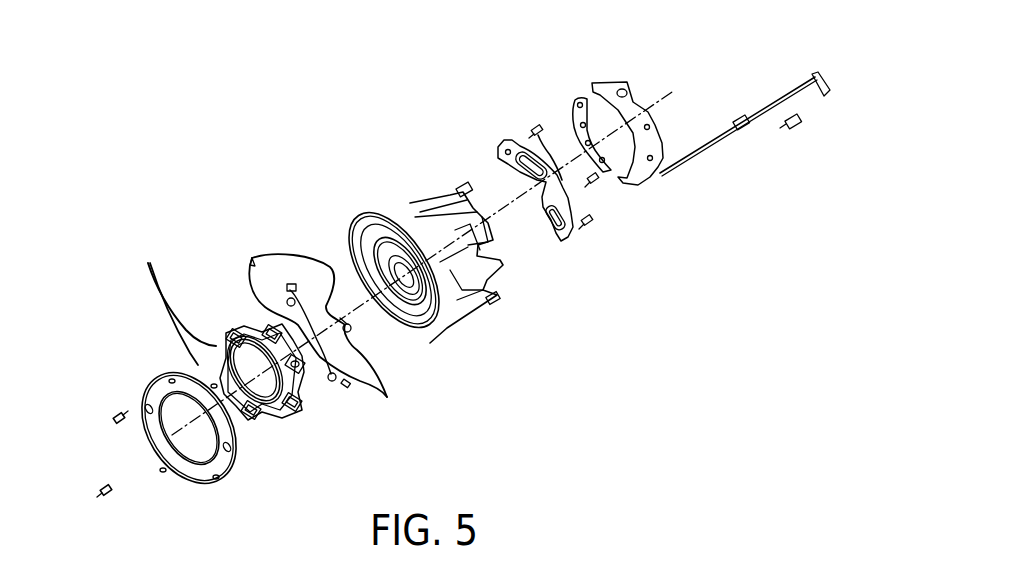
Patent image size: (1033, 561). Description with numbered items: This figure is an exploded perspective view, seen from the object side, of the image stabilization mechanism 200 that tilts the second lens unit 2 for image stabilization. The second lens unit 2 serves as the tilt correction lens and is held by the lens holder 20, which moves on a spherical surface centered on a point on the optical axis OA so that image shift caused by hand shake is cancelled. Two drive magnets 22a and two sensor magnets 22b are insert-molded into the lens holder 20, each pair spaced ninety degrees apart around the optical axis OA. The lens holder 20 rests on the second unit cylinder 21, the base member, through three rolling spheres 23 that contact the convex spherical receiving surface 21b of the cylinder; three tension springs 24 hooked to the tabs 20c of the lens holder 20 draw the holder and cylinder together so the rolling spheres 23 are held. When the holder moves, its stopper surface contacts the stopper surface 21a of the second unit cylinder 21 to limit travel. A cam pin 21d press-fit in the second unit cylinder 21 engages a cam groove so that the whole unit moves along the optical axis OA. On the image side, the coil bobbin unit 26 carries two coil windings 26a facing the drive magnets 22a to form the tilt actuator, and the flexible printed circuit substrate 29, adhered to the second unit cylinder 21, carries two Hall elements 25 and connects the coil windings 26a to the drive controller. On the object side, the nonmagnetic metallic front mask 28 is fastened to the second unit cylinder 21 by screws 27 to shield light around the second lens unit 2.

The image stabilization mechanism 200 is at (830, 40).
The second lens unit 2 is at (263, 397).
The lens holder 20 is at (235, 322).
The tabs 20c is at (233, 360).
The second unit cylinder 21 is at (395, 264).
The stopper surface 21a is at (422, 272).
The spherical receiving surface 21b is at (382, 232).
The cam pin 21d is at (464, 192).
The drive magnets 22a is at (256, 350).
The sensor magnets 22b is at (177, 303).
The rolling spheres 23 is at (252, 248).
The tension springs 24 is at (324, 329).
The Hall elements 25 is at (612, 168).
The coil bobbin unit 26 is at (519, 200).
The coil windings 26a is at (525, 180).
The screws 27 is at (106, 484).
The front mask 28 is at (225, 478).
The flexible printed circuit substrate 29 is at (653, 128).
The optical axis OA is at (496, 203).